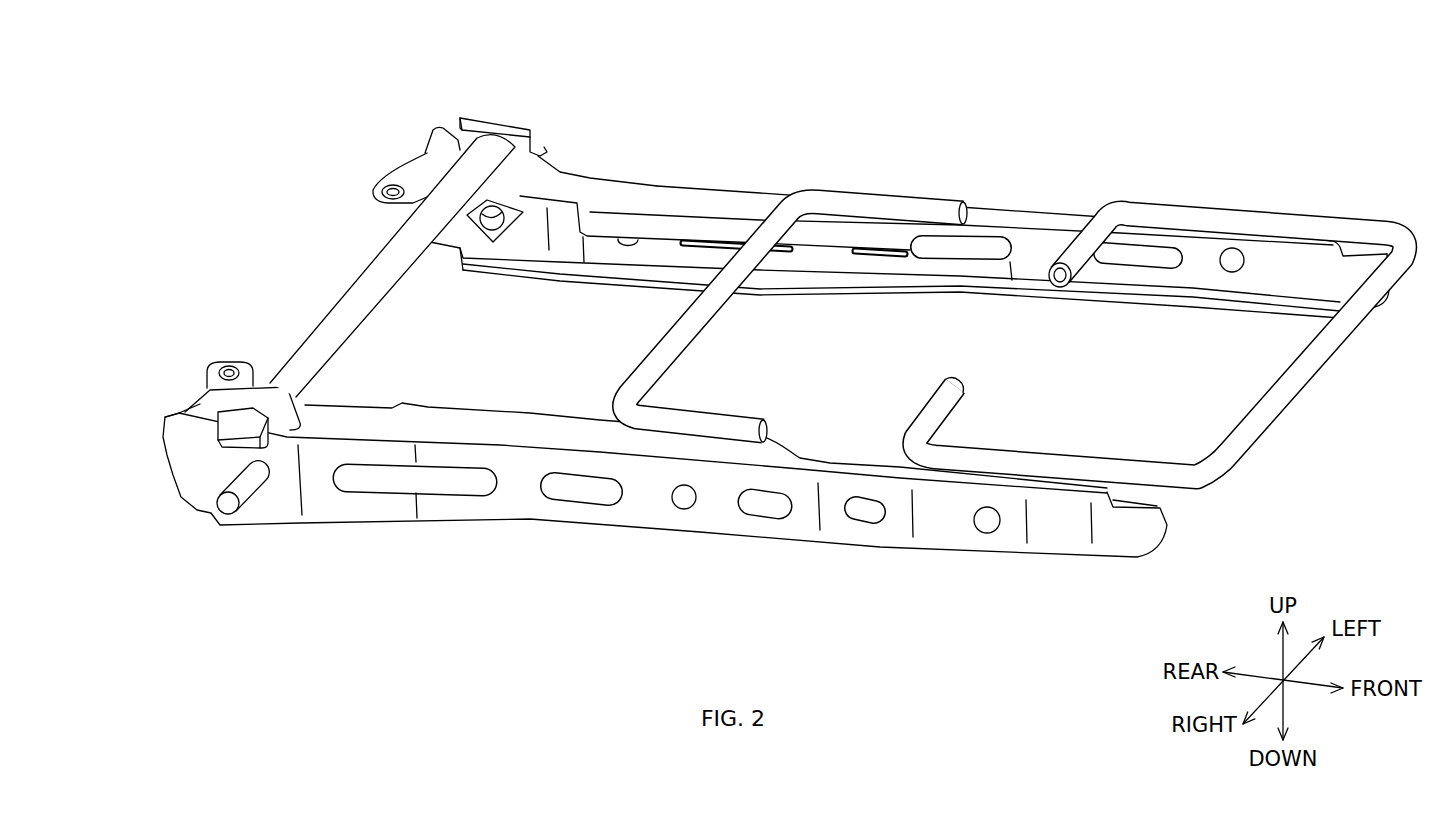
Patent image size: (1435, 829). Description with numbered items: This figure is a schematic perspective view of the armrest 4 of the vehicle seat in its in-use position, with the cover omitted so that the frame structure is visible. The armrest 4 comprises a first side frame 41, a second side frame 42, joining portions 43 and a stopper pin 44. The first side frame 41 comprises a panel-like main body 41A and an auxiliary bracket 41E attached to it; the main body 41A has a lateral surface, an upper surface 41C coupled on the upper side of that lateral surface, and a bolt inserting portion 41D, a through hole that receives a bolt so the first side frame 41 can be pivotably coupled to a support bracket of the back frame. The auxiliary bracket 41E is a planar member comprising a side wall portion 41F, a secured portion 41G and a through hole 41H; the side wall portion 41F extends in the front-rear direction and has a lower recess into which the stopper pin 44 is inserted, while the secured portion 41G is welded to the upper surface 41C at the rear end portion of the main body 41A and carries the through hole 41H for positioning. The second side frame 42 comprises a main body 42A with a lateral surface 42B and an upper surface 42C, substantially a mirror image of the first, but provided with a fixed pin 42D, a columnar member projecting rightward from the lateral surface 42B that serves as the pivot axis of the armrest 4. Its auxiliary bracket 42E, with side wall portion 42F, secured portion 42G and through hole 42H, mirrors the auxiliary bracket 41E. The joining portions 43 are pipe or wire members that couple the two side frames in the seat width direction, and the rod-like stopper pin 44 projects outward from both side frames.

The armrest 4 is at (1125, 184).
The first side frame 41 is at (368, 178).
The main body 41A is at (716, 206).
The upper surface 41C is at (565, 185).
The bolt inserting portion 41D is at (520, 207).
The auxiliary bracket 41E is at (445, 146).
The side wall portion 41F is at (467, 121).
The secured portion 41G is at (427, 154).
The through hole 41H is at (395, 198).
The second side frame 42 is at (161, 474).
The main body 42A is at (543, 511).
The lateral surface 42B is at (447, 507).
The upper surface 42C is at (442, 415).
The fixed pin 42D is at (248, 490).
The auxiliary bracket 42E is at (191, 410).
The side wall portion 42F is at (287, 405).
The secured portion 42G is at (210, 365).
The through hole 42H is at (234, 362).
The joining portions 43 is at (680, 333).
The stopper pin 44 is at (368, 297).